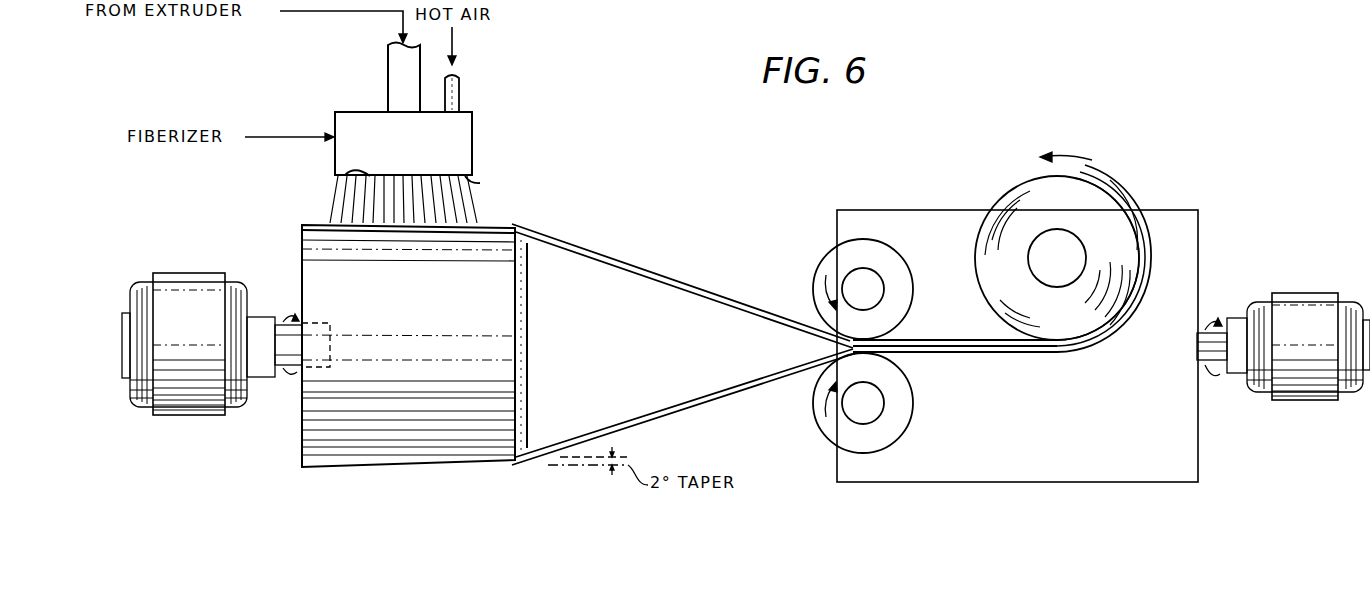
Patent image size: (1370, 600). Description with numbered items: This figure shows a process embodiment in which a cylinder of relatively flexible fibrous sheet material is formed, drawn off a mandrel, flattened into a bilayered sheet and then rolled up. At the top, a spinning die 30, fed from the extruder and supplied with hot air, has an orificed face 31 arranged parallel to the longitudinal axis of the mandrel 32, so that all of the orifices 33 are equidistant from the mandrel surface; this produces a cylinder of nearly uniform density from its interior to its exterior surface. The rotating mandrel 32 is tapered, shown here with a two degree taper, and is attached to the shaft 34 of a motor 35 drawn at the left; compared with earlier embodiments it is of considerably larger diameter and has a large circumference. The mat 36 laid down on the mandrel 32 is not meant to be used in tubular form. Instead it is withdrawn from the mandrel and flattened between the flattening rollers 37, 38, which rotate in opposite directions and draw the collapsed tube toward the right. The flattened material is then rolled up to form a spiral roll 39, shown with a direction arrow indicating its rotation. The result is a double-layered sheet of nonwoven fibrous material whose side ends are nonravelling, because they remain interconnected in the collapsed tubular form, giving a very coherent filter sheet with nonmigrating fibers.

The spinning die 30 is at (467, 126).
The orificed face 31 is at (472, 185).
The mandrel 32 is at (428, 309).
The orifices 33 is at (366, 173).
The shaft 34 is at (290, 378).
The motor 35 is at (181, 408).
The mat 36 is at (496, 226).
The flattening roller 37 is at (897, 273).
The flattening roller 38 is at (900, 421).
The spiral roll 39 is at (1103, 213).